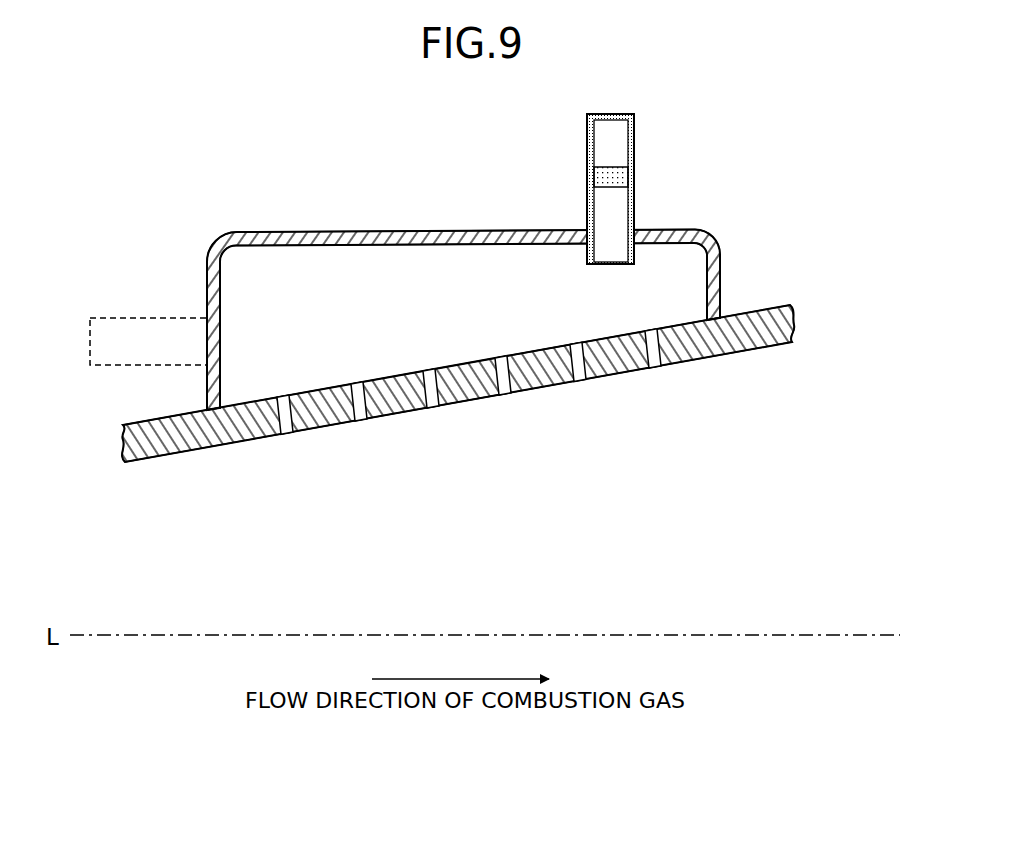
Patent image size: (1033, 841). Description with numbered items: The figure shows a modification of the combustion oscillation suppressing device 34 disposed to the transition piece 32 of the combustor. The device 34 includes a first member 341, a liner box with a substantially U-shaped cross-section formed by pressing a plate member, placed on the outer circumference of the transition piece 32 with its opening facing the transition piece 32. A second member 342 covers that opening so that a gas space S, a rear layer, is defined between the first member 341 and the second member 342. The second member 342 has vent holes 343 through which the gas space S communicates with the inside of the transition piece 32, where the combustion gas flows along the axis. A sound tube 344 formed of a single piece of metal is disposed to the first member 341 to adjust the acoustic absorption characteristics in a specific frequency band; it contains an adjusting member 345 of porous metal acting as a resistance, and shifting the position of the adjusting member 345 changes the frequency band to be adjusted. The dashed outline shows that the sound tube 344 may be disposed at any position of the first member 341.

The transition piece 32 is at (163, 456).
The combustion oscillation suppressing device 34 is at (441, 300).
The first member 341 is at (538, 230).
The second member 342 is at (472, 400).
The vent holes 343 is at (286, 435).
The sound tube 344 is at (635, 124).
The adjusting member 345 is at (613, 176).
The gas space S is at (487, 255).